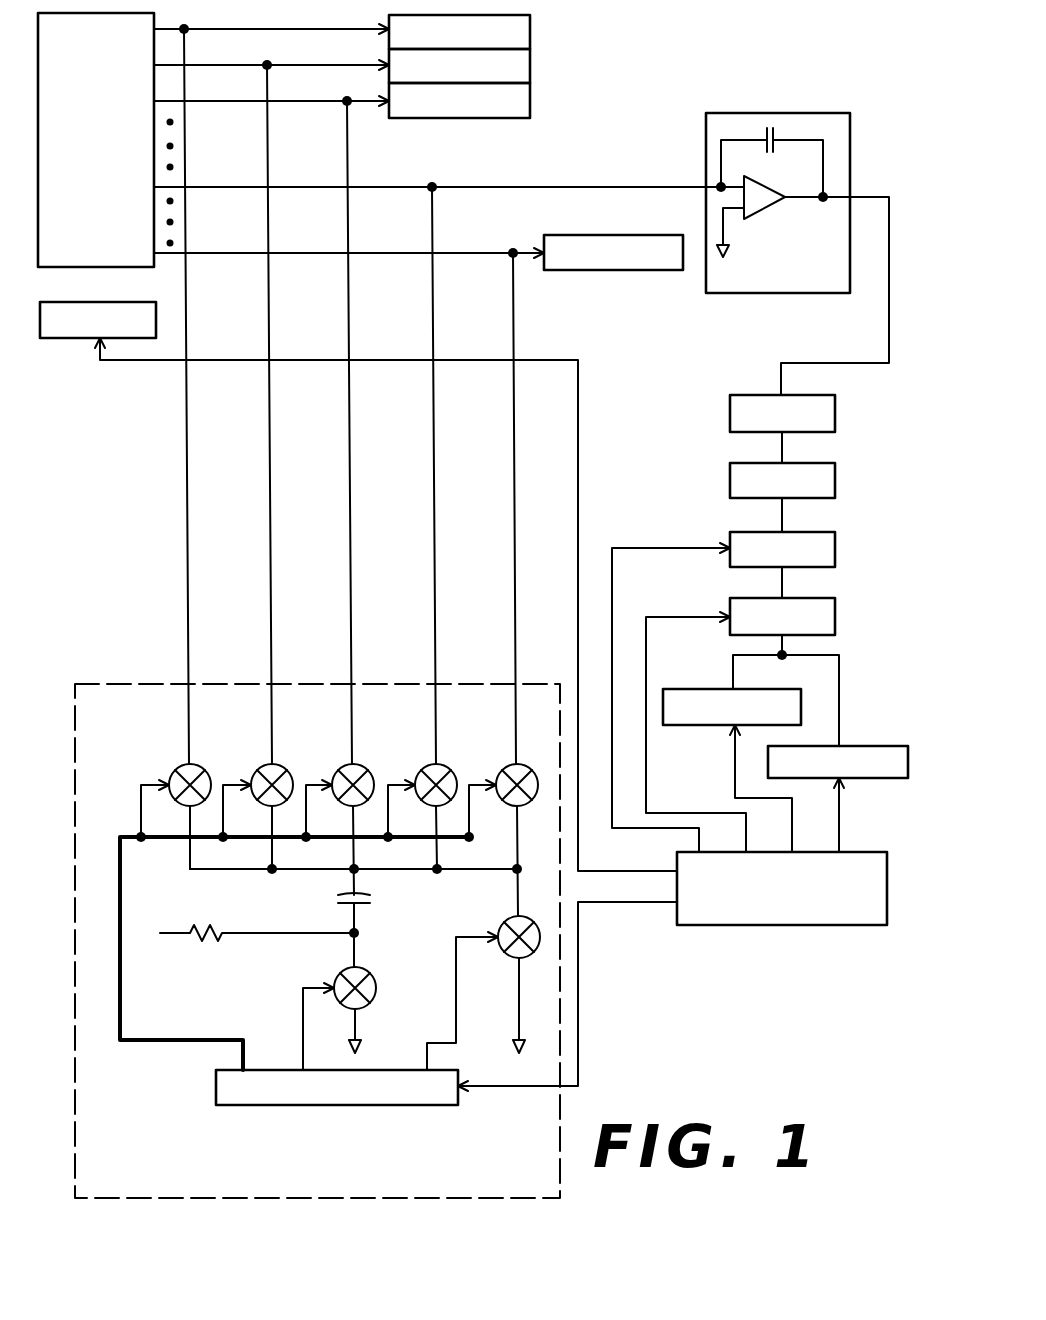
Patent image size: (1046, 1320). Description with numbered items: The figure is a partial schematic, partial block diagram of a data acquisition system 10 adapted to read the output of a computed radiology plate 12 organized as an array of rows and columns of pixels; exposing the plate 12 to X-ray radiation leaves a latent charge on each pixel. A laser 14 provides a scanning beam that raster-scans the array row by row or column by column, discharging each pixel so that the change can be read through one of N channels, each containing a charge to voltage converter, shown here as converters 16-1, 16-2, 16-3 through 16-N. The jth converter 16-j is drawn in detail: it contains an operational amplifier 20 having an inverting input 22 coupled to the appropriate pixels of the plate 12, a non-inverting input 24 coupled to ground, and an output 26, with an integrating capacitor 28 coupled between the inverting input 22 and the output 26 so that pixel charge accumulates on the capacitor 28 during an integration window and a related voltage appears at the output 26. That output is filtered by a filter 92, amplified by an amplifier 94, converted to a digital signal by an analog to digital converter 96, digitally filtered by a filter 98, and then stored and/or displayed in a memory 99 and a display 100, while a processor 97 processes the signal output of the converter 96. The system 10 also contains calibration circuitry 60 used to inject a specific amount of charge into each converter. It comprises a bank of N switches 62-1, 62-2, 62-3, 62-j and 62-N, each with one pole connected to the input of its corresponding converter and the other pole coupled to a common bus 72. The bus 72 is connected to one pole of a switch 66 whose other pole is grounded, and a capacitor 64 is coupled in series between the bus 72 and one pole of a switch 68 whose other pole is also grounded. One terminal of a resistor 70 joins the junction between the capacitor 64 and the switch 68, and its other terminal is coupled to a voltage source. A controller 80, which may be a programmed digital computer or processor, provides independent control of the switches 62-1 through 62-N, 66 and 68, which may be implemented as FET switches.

The data acquisition system 10 is at (473, 605).
The computed radiology plate 12 is at (106, 222).
The laser 14 is at (80, 339).
The charge to voltage converter 16-1 is at (530, 32).
The charge to voltage converter 16-2 is at (530, 66).
The charge to voltage converter 16-3 is at (530, 100).
The charge to voltage converter 16-N is at (600, 270).
The jth charge to voltage converter 16-j is at (797, 254).
The operational amplifier 20 is at (770, 210).
The inverting input 22 is at (740, 184).
The non-inverting input 24 is at (734, 218).
The output 26 is at (788, 190).
The integrating capacitor 28 is at (773, 133).
The calibration circuitry 60 is at (450, 1162).
The switch 62-1 is at (178, 770).
The switch 62-2 is at (260, 770).
The switch 62-3 is at (341, 770).
The switch 62-j is at (425, 770).
The switch 62-N is at (506, 770).
The capacitor 64 is at (372, 897).
The switch 66 is at (505, 920).
The switch 68 is at (343, 975).
The resistor 70 is at (214, 930).
The common bus 72 is at (516, 872).
The controller 80 is at (216, 1086).
The filter 92 is at (835, 414).
The amplifier 94 is at (835, 481).
The analog to digital converter 96 is at (835, 550).
The processor 97 is at (770, 925).
The filter 98 is at (835, 619).
The memory 99 is at (745, 689).
The display 100 is at (858, 780).